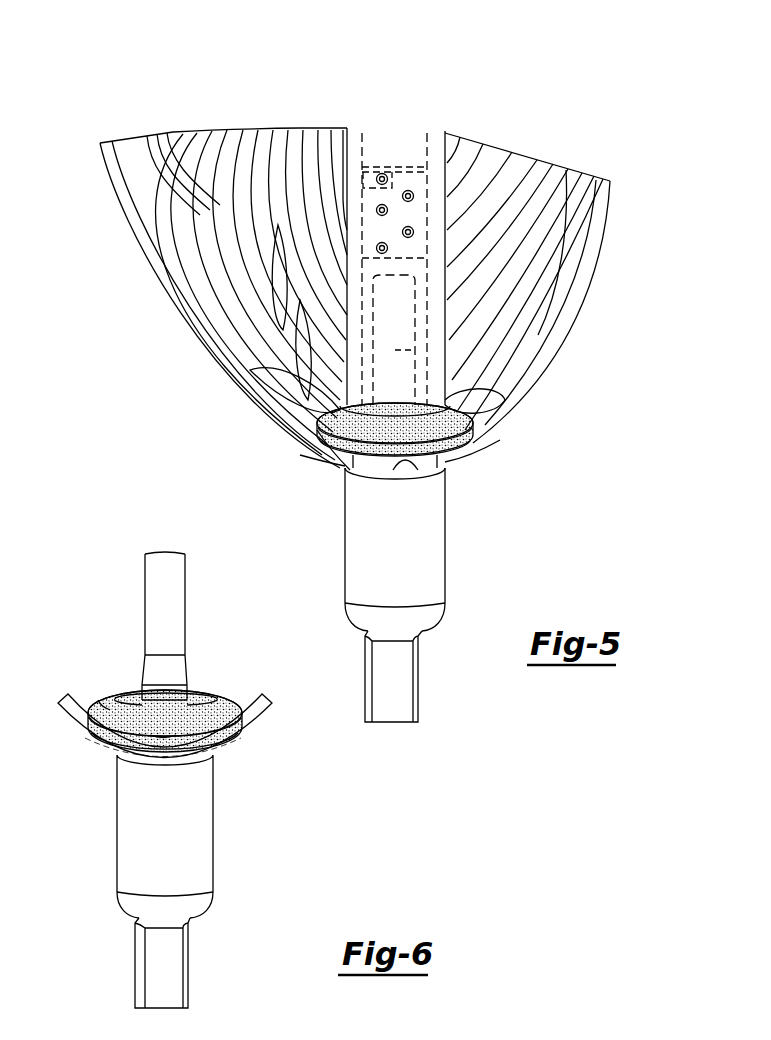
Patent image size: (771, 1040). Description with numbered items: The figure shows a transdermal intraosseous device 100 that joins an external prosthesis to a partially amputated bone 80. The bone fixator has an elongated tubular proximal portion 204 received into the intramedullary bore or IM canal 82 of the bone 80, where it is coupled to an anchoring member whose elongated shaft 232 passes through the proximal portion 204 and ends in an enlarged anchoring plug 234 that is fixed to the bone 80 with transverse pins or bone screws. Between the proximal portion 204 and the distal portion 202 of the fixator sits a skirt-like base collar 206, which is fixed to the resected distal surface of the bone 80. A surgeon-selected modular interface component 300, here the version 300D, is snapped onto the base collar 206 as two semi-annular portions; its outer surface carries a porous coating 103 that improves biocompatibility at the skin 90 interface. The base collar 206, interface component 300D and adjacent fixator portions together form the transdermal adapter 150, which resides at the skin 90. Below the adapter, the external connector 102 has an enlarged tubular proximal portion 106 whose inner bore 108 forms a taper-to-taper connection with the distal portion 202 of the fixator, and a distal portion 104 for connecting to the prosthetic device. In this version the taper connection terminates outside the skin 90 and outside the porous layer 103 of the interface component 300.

In FIG. 5, the bone 80 is at (437, 150).
In FIG. 5, the intramedullary bore or IM canal 82 is at (366, 150).
In FIG. 5, the skin 90 is at (583, 270).
In FIG. 6, the skin 90 is at (78, 720).
In FIG. 5, the transdermal intraosseous device 100 is at (429, 591).
In FIG. 6, the transdermal intraosseous device 100 is at (203, 881).
In FIG. 5, the external connector 102 is at (425, 573).
In FIG. 6, the external connector 102 is at (200, 795).
In FIG. 6, the porous coating 103 is at (162, 725).
In FIG. 5, the distal portion 104 is at (417, 687).
In FIG. 6, the distal portion 104 is at (185, 970).
In FIG. 5, the enlarged tubular proximal portion 106 is at (355, 588).
In FIG. 6, the enlarged tubular proximal portion 106 is at (202, 836).
In FIG. 5, the inner bore 108 is at (418, 470).
In FIG. 5, the transdermal adapter 150 is at (446, 559).
In FIG. 6, the transdermal adapter 150 is at (160, 821).
In FIG. 5, the distal portion 202 is at (340, 468).
In FIG. 5, the proximal portion 204 is at (428, 312).
In FIG. 6, the proximal portion 204 is at (157, 590).
In FIG. 5, the base collar 206 is at (445, 399).
In FIG. 6, the base collar 206 is at (100, 700).
In FIG. 5, the elongated shaft 232 is at (415, 350).
In FIG. 5, the anchoring plug 234 is at (390, 168).
In FIG. 6, the modular interface component 300 is at (232, 705).
In FIG. 5, the modular interface component 300D is at (470, 440).